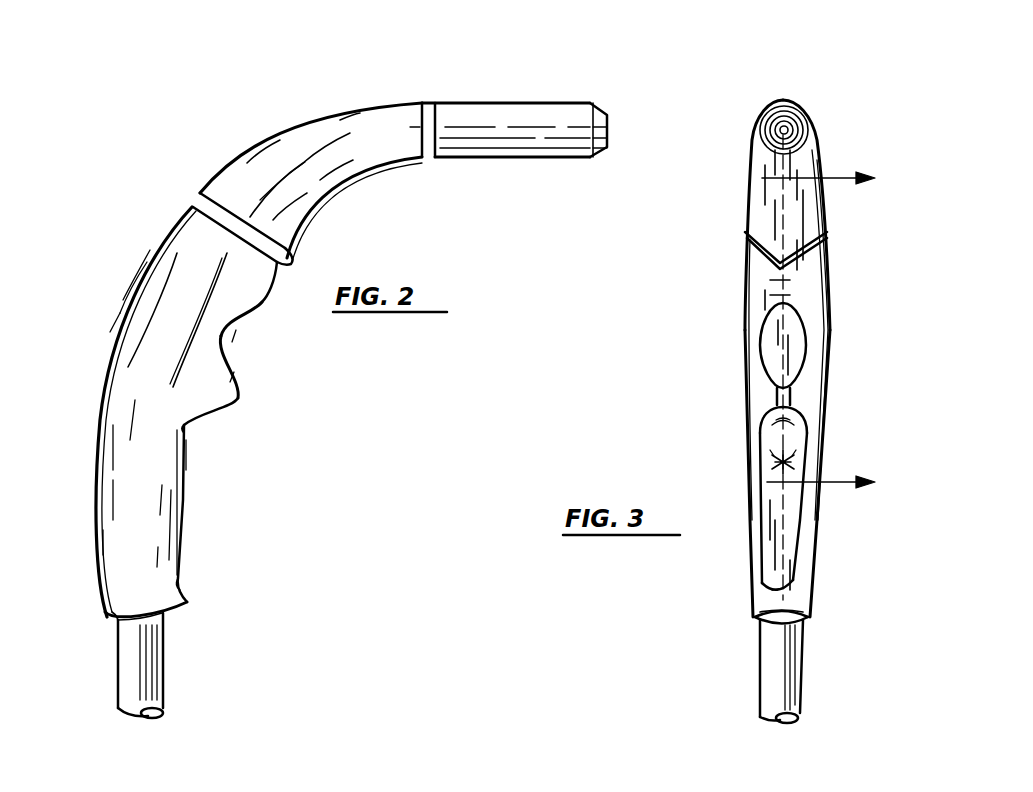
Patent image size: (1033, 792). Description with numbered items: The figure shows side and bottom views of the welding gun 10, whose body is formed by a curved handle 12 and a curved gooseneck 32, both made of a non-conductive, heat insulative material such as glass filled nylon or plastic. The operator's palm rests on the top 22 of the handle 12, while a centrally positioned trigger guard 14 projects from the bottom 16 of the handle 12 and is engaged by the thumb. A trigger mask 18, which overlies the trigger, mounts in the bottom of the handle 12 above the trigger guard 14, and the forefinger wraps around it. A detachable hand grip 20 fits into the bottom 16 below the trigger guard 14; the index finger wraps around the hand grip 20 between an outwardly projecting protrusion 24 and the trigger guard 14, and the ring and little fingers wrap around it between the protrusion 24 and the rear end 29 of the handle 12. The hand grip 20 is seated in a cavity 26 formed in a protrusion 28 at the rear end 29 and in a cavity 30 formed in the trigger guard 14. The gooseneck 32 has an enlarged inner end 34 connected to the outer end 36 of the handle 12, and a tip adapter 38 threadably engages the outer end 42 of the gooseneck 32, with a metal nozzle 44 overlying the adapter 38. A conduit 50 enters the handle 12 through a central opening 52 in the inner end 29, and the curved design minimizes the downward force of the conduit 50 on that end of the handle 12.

In FIG. 2, the welding gun 10 is at (101, 221).
In FIG. 3, the welding gun 10 is at (901, 330).
In FIG. 2, the curved handle 12 is at (122, 390).
In FIG. 3, the curved handle 12 is at (787, 428).
In FIG. 2, the trigger guard 14 is at (240, 393).
In FIG. 3, the trigger guard 14 is at (777, 400).
In FIG. 2, the bottom 16 is at (255, 300).
In FIG. 3, the bottom 16 is at (777, 283).
In FIG. 2, the trigger mask 18 is at (235, 330).
In FIG. 3, the trigger mask 18 is at (777, 343).
In FIG. 2, the detachable hand grip 20 is at (187, 500).
In FIG. 3, the detachable hand grip 20 is at (793, 502).
In FIG. 2, the top 22 is at (123, 307).
In FIG. 2, the protrusion 24 is at (190, 457).
In FIG. 3, the protrusion 24 is at (770, 467).
In FIG. 2, the cavity 26 is at (180, 580).
In FIG. 3, the cavity 26 is at (767, 587).
In FIG. 2, the protrusion 28 is at (187, 597).
In FIG. 3, the protrusion 28 is at (817, 577).
In FIG. 2, the rear end 29 is at (180, 613).
In FIG. 3, the rear end 29 is at (760, 627).
In FIG. 2, the cavity 30 is at (187, 428).
In FIG. 3, the cavity 30 is at (800, 423).
In FIG. 2, the curved gooseneck 32 is at (317, 123).
In FIG. 3, the curved gooseneck 32 is at (767, 203).
In FIG. 2, the enlarged inner end 34 is at (193, 210).
In FIG. 2, the outer end 36 is at (293, 255).
In FIG. 3, the outer end 36 is at (827, 232).
In FIG. 2, the tip adapter 38 is at (432, 103).
In FIG. 2, the outer end 42 is at (420, 103).
In FIG. 2, the metal nozzle 44 is at (537, 117).
In FIG. 2, the conduit 50 is at (127, 683).
In FIG. 3, the conduit 50 is at (767, 695).
In FIG. 2, the central opening 52 is at (117, 623).
In FIG. 3, the central opening 52 is at (807, 627).